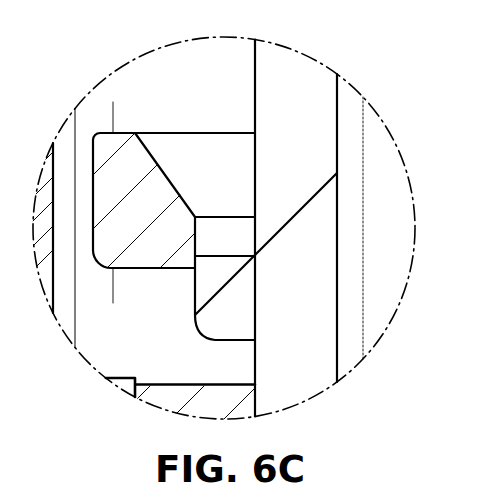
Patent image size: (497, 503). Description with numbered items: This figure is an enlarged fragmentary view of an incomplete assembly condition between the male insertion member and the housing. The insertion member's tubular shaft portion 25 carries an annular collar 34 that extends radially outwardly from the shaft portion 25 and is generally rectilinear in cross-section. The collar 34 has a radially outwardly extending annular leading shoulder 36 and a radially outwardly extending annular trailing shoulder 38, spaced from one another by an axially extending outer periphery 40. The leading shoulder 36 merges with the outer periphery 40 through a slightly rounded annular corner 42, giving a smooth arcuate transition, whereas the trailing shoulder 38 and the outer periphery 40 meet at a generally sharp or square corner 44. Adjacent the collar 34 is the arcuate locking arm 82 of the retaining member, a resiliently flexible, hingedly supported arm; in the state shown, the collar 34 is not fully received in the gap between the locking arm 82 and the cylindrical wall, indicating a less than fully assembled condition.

The tubular shaft portion 25 is at (255, 368).
The annular collar 34 is at (211, 254).
The outer periphery 40 is at (196, 290).
The leading shoulder 36 is at (175, 341).
The corner 42 is at (197, 326).
The trailing shoulder 38 is at (146, 174).
The corner 44 is at (195, 260).
The locking arm 82 is at (93, 183).